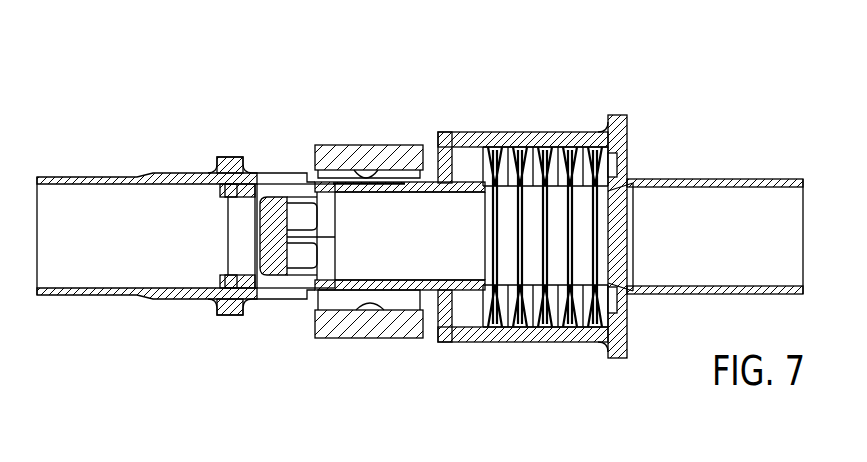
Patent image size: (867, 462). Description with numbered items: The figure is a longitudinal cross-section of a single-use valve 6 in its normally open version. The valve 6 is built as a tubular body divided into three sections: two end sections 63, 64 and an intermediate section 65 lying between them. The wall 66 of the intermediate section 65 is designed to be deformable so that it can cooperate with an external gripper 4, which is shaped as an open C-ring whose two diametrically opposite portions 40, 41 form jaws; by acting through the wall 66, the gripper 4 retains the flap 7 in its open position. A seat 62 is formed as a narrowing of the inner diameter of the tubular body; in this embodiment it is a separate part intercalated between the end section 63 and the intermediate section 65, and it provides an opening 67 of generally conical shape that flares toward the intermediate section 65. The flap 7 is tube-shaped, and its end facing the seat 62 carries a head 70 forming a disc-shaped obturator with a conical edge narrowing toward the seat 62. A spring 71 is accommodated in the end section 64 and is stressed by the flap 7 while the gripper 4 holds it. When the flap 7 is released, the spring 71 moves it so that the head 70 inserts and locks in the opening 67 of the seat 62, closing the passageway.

The single-use valve 6 is at (503, 106).
The gripper 4 is at (363, 150).
The flap 7 is at (365, 262).
The portion forming a jaw 40 is at (340, 157).
The portion forming a jaw 41 is at (332, 322).
The seat 62 is at (240, 188).
The end section 63 is at (128, 313).
The end section 64 is at (513, 348).
The intermediate section 65 is at (431, 293).
The wall 66 is at (399, 180).
The opening 67 is at (242, 260).
The head 70 is at (272, 200).
The spring 71 is at (565, 160).